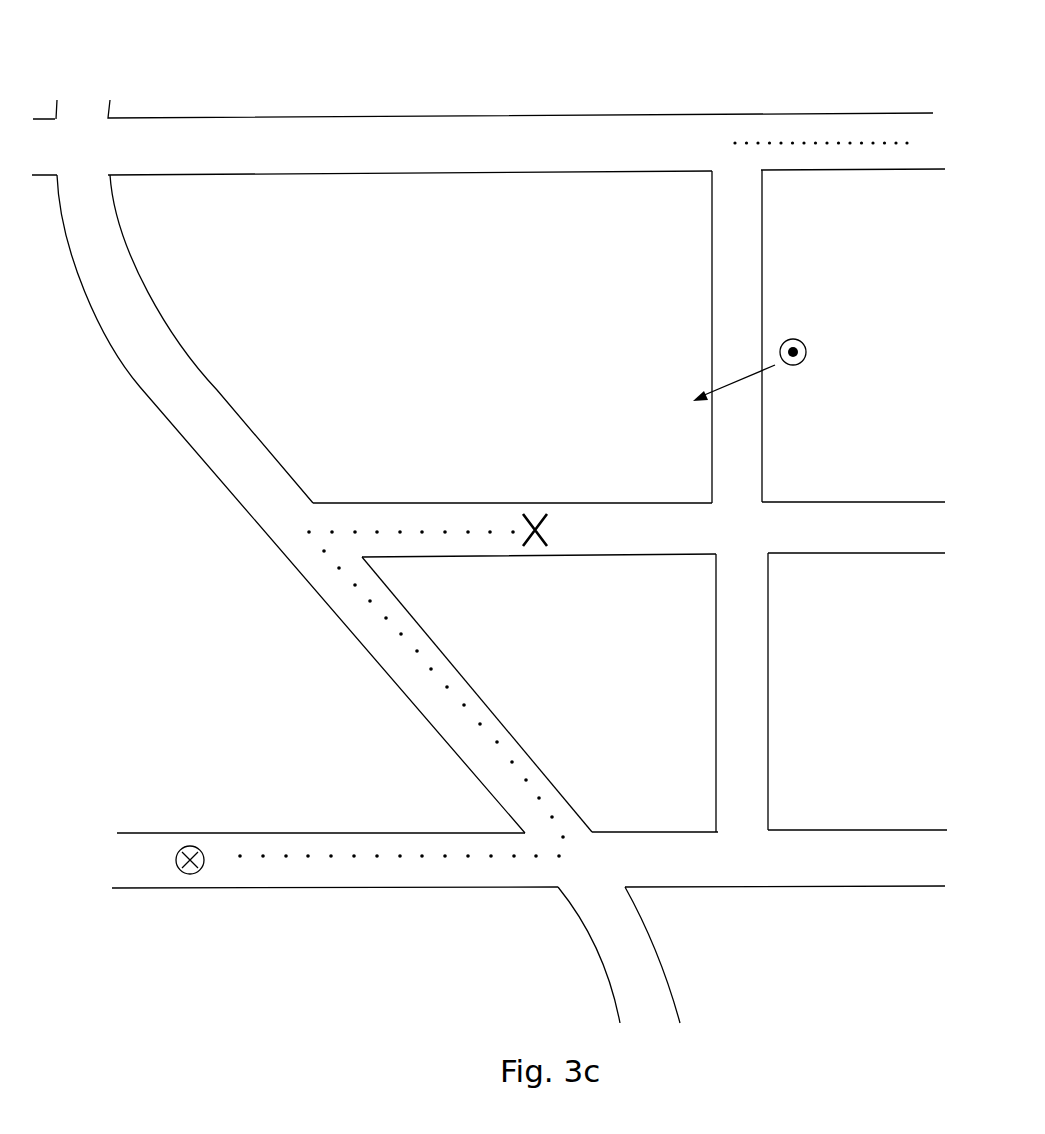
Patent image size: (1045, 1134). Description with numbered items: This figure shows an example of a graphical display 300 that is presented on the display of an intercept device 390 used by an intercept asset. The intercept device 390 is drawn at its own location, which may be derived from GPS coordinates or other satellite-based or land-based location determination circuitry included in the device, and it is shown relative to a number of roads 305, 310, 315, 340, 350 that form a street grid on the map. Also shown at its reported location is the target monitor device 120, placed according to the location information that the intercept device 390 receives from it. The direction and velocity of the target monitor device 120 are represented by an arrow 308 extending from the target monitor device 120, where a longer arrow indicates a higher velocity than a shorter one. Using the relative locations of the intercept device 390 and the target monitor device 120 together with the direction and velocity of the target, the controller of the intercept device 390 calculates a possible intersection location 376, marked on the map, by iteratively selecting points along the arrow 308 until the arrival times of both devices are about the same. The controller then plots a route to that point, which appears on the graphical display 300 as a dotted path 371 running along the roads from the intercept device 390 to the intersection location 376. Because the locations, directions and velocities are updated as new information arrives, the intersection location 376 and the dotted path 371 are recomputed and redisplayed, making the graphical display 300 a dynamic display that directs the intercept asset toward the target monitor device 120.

The graphical display 300 is at (322, 78).
The road 315 is at (613, 116).
The road 350 is at (712, 343).
The target monitor device 120 is at (800, 363).
The arrow 308 is at (732, 382).
The road 340 is at (452, 503).
The possible intersection location 376 is at (541, 512).
The road 310 is at (481, 688).
The dotted path 371 is at (347, 578).
The road 305 is at (883, 830).
The intercept device 390 is at (195, 872).